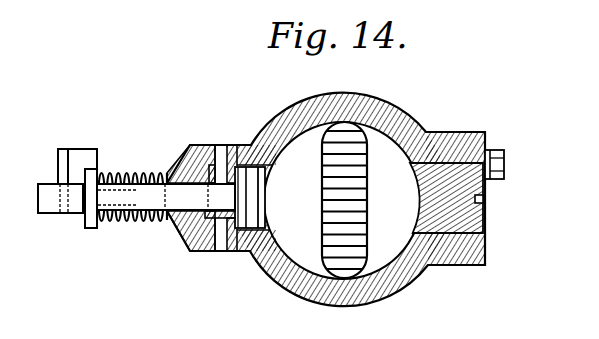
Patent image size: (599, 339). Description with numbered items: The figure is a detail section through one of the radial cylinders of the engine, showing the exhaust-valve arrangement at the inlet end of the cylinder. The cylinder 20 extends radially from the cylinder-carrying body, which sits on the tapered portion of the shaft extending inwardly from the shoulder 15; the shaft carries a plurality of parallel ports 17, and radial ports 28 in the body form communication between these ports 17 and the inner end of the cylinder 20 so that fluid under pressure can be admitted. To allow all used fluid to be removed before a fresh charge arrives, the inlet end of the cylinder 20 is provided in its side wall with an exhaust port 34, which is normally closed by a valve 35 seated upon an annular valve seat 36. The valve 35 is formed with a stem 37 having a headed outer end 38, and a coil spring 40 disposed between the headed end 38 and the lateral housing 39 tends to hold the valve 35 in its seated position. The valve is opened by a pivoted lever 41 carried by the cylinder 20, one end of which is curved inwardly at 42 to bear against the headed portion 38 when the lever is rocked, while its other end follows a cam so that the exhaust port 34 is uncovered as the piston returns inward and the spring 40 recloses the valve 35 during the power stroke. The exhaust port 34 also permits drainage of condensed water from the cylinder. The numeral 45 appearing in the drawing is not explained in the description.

The shoulder 15 is at (237, 118).
The parallel ports 17 is at (355, 213).
The cylinder 20 is at (378, 303).
The radial ports 28 is at (323, 193).
The exhaust port 34 is at (187, 246).
The valve 35 is at (243, 206).
The annular valve seat 36 is at (234, 148).
The stem 37 is at (184, 196).
The headed outer end 38 is at (92, 228).
The lateral housing 39 is at (176, 166).
The coil spring 40 is at (117, 219).
The pivoted lever 41 is at (77, 151).
The inwardly curved end 42 is at (51, 202).
The threaded plug 45 is at (457, 191).